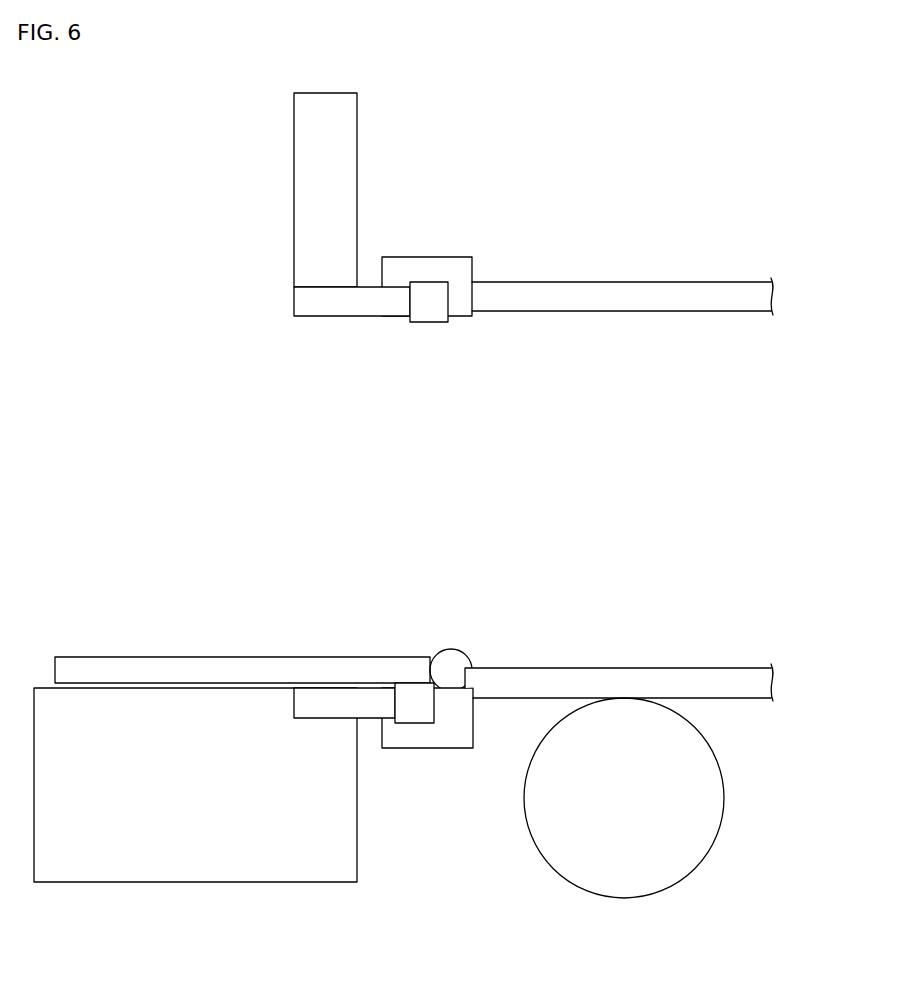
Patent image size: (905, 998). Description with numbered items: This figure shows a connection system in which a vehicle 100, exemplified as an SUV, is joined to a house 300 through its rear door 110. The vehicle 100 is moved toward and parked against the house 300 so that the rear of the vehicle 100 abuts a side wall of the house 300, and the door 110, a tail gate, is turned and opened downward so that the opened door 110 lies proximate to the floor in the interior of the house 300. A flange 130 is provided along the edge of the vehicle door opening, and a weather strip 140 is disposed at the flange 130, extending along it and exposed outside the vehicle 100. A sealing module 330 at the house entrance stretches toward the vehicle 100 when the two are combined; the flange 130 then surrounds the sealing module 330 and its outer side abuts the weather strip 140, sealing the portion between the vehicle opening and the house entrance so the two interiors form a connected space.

The vehicle 100 is at (683, 240).
The door 110 is at (178, 667).
The flange 130 is at (437, 262).
The weather strip 140 is at (432, 313).
The house 300 is at (302, 180).
The sealing module 330 is at (340, 310).